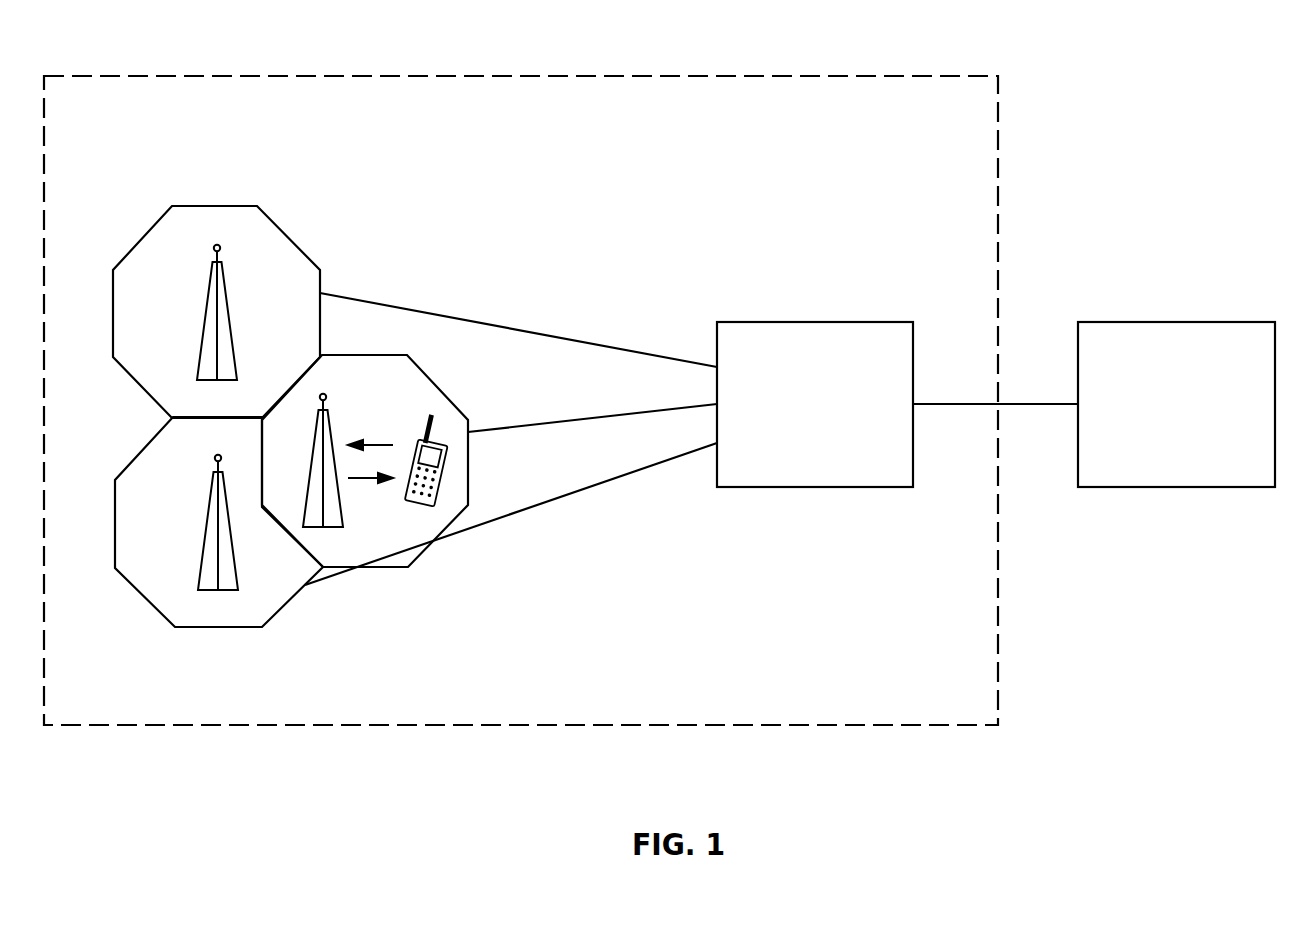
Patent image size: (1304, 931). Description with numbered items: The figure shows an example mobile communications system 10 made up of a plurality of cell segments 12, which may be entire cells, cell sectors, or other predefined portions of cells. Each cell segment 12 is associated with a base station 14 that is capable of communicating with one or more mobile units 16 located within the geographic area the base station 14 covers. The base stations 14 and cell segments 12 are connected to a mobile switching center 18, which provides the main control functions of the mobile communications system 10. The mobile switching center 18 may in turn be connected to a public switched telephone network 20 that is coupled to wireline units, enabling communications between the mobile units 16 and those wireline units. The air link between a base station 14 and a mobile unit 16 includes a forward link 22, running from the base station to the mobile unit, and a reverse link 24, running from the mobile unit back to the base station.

The mobile communications system 10 is at (657, 120).
The cell segment 12 is at (228, 206).
The base station 14 is at (205, 316).
The mobile unit 16 is at (438, 492).
The mobile switching center (MSC) 18 is at (835, 322).
The public switched telephone network (PSTN) 20 is at (1175, 322).
The forward link 22 is at (366, 482).
The reverse link 24 is at (385, 440).